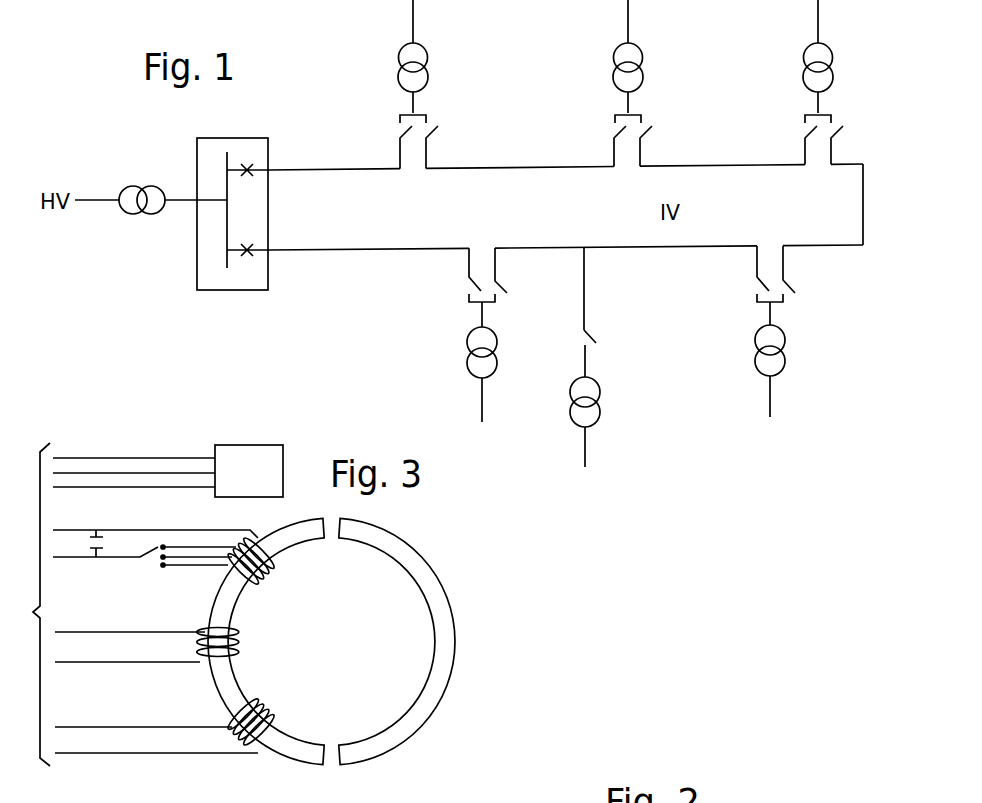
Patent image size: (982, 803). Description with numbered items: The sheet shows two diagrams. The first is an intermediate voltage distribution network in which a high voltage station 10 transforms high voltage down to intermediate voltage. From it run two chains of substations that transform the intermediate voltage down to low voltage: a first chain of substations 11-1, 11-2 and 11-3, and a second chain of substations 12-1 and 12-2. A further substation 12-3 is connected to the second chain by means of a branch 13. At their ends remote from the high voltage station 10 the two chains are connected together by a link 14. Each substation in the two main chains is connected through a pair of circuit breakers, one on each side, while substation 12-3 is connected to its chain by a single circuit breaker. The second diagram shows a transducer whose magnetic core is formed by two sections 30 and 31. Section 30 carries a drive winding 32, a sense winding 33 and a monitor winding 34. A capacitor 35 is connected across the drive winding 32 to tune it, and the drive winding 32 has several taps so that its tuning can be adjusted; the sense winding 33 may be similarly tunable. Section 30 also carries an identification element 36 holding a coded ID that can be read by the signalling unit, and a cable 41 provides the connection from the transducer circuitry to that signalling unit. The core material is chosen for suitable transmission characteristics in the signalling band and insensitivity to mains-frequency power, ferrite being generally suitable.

In FIG. 1, the high voltage station 10 is at (232, 200).
In FIG. 1, the substation 11-1 is at (402, 84).
In FIG. 1, the substation 11-2 is at (616, 83).
In FIG. 1, the substation 11-3 is at (803, 82).
In FIG. 1, the substation 12-1 is at (463, 351).
In FIG. 1, the substation 12-2 is at (752, 348).
In FIG. 1, the substation 12-3 is at (607, 402).
In FIG. 1, the branch 13 is at (586, 272).
In FIG. 1, the link 14 is at (860, 173).
In FIG. 3, the section of magnetic core 30 is at (310, 743).
In FIG. 3, the section of magnetic core 31 is at (397, 641).
In FIG. 3, the drive winding 32 is at (260, 568).
In FIG. 3, the sense winding 33 is at (232, 645).
In FIG. 3, the monitor winding 34 is at (262, 721).
In FIG. 3, the capacitor 35 is at (92, 559).
In FIG. 3, the identification element 36 is at (249, 471).
In FIG. 3, the cable 41 is at (29, 604).